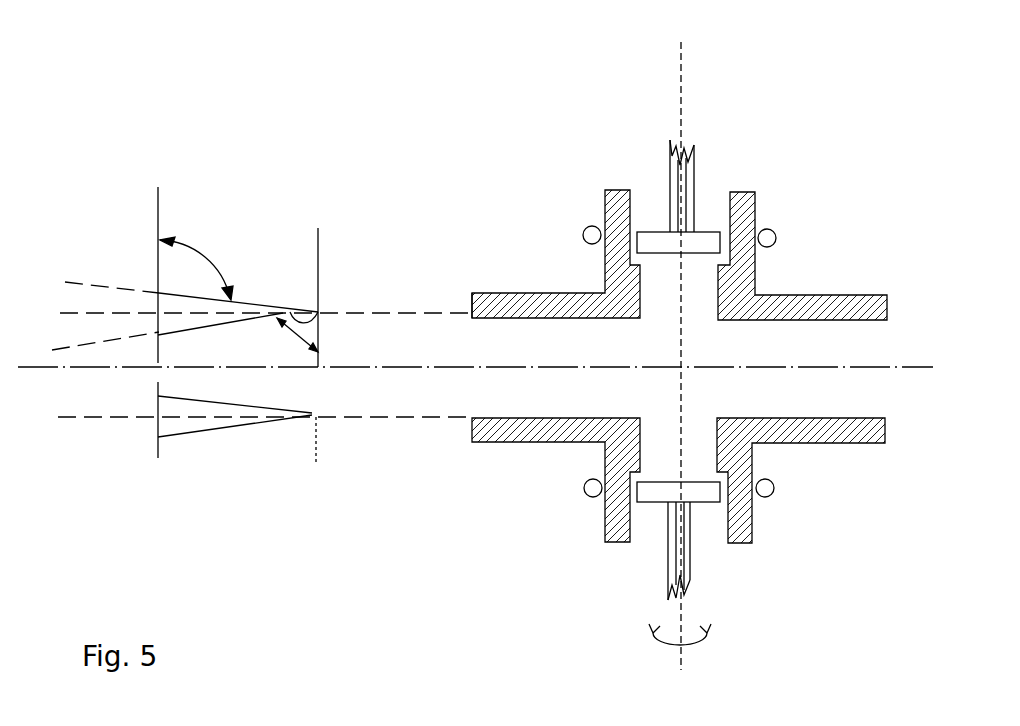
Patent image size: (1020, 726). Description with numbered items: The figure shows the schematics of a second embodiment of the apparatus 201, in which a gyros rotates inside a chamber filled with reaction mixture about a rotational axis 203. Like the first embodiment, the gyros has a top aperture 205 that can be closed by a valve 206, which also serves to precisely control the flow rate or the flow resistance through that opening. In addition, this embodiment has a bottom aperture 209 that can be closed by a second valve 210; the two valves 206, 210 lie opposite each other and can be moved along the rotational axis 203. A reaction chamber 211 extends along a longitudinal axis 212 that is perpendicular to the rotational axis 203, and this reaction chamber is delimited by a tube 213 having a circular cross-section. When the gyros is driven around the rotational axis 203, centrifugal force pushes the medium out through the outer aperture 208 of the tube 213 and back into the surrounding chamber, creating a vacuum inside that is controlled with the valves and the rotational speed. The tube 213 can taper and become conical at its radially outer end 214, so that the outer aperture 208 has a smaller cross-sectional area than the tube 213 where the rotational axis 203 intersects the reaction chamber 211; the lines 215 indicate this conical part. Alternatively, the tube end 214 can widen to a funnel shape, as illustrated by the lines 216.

The apparatus 201 is at (432, 140).
The rotational axis 203 is at (682, 73).
The top aperture 205 is at (703, 262).
The valve 206 is at (697, 172).
The outer aperture 208 is at (472, 385).
The bottom aperture 209 is at (698, 472).
The valve 210 is at (690, 573).
The reaction chamber 211 is at (634, 358).
The longitudinal axis 212 is at (425, 372).
The tube 213 is at (528, 295).
The radially outer end of the tube 214 is at (468, 300).
The lines 215 is at (322, 308).
The lines 216 is at (247, 300).